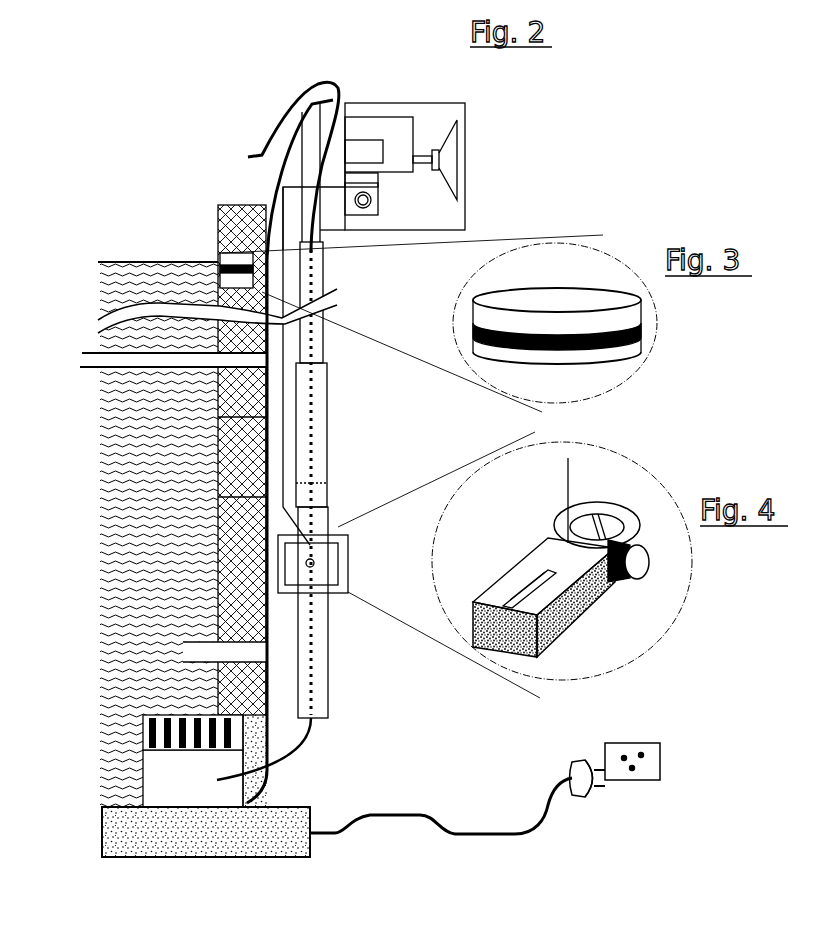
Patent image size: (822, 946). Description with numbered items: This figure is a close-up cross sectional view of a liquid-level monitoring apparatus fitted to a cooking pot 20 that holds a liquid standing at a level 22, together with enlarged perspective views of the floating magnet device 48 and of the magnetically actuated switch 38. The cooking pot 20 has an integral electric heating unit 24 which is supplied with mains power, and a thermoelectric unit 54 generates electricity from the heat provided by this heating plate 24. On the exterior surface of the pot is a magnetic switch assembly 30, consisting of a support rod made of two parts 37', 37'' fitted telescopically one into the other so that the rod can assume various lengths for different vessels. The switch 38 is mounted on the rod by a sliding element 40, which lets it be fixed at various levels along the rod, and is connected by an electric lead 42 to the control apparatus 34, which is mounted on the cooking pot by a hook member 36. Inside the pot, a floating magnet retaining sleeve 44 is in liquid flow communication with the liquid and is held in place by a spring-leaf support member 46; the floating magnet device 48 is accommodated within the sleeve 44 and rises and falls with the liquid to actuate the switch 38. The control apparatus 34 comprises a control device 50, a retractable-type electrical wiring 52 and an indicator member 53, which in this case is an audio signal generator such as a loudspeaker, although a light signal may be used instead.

In FIG. 2, the cooking pot 20 is at (284, 742).
In FIG. 2, the liquid level 22 is at (123, 263).
In FIG. 2, the electric heating unit 24 is at (262, 838).
In FIG. 2, the magnetic switch assembly 30 is at (352, 441).
In FIG. 2, the control apparatus 34 is at (482, 136).
In FIG. 2, the hook member 36 is at (328, 72).
In FIG. 2, the first rod part 37' is at (364, 484).
In FIG. 2, the second rod part 37'' is at (360, 233).
In FIG. 2, the magnetically actuated switch 38 is at (342, 566).
In FIG. 4, the magnetically actuated switch 38 is at (608, 625).
In FIG. 4, the sliding element 40 is at (625, 535).
In FIG. 2, the electric lead 42 is at (330, 400).
In FIG. 4, the electric lead 42 is at (573, 482).
In FIG. 2, the floating magnet retaining sleeve 44 is at (208, 530).
In FIG. 2, the spring-leaf support member 46 is at (97, 353).
In FIG. 2, the floating magnet device 48 is at (230, 258).
In FIG. 3, the floating magnet device 48 is at (660, 312).
In FIG. 2, the control device 50 is at (393, 128).
In FIG. 2, the retractable-type electrical wiring 52 is at (372, 203).
In FIG. 2, the indicator member 53 is at (458, 160).
In FIG. 2, the thermoelectric unit 54 is at (181, 795).